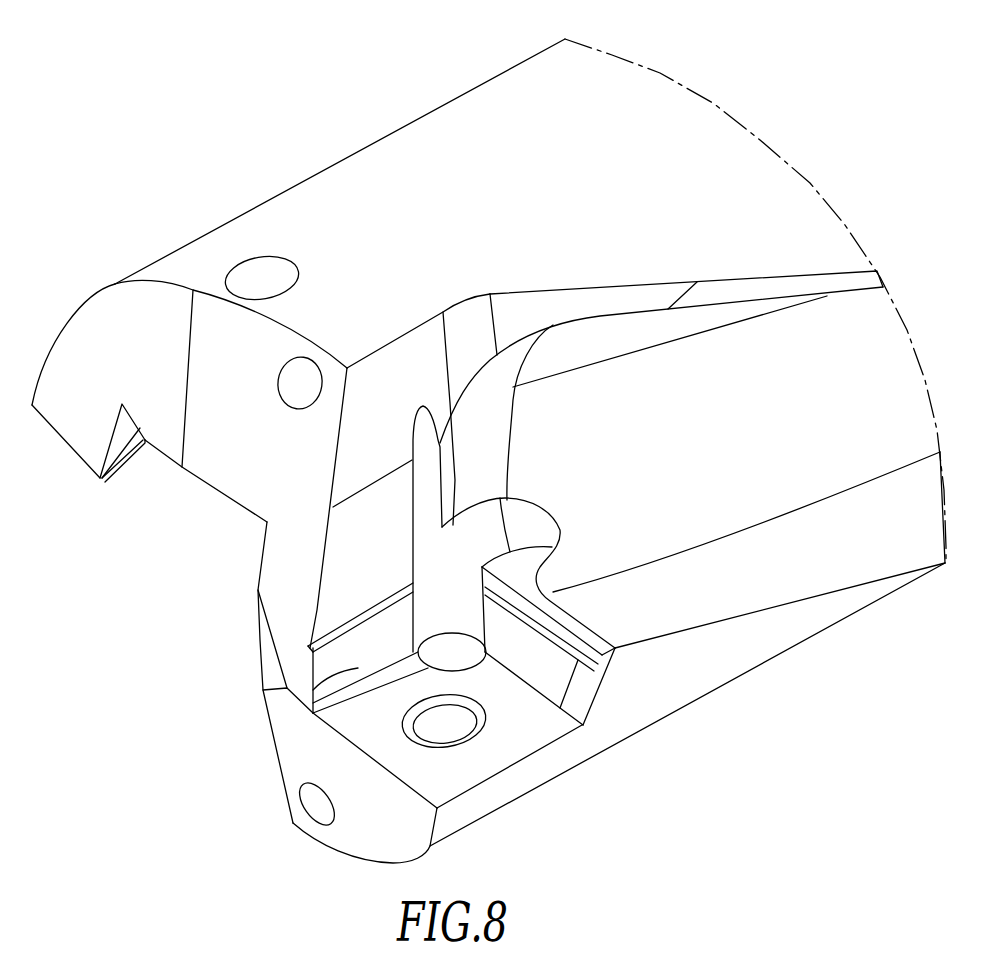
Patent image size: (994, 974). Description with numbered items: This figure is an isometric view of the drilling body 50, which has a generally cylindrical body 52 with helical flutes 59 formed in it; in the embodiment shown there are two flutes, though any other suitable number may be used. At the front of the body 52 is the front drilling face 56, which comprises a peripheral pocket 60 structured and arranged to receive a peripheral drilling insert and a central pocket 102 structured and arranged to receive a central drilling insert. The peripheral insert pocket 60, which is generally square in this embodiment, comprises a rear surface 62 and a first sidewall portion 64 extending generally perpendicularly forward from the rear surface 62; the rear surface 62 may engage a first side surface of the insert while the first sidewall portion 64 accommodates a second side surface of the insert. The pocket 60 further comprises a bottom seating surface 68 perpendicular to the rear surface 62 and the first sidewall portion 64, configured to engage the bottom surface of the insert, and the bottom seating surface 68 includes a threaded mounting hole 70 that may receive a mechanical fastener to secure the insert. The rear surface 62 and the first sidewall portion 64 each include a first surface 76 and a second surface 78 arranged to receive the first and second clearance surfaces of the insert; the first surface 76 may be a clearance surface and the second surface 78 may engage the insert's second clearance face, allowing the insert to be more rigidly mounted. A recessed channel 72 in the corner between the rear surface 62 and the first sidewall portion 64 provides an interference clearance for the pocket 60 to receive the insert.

The drilling body 50 is at (322, 112).
The body 52 is at (702, 127).
The front drilling face 56 is at (282, 545).
The helical flutes 59 is at (863, 363).
The peripheral pocket 60 is at (505, 748).
The rear surface 62 is at (552, 672).
The first sidewall portion 64 is at (310, 688).
The bottom seating surface 68 is at (375, 716).
The threaded mounting hole 70 is at (415, 733).
The recessed channel 72 is at (443, 655).
The first surface 76 is at (330, 700).
The second surface 78 is at (332, 653).
The central pocket 102 is at (178, 475).